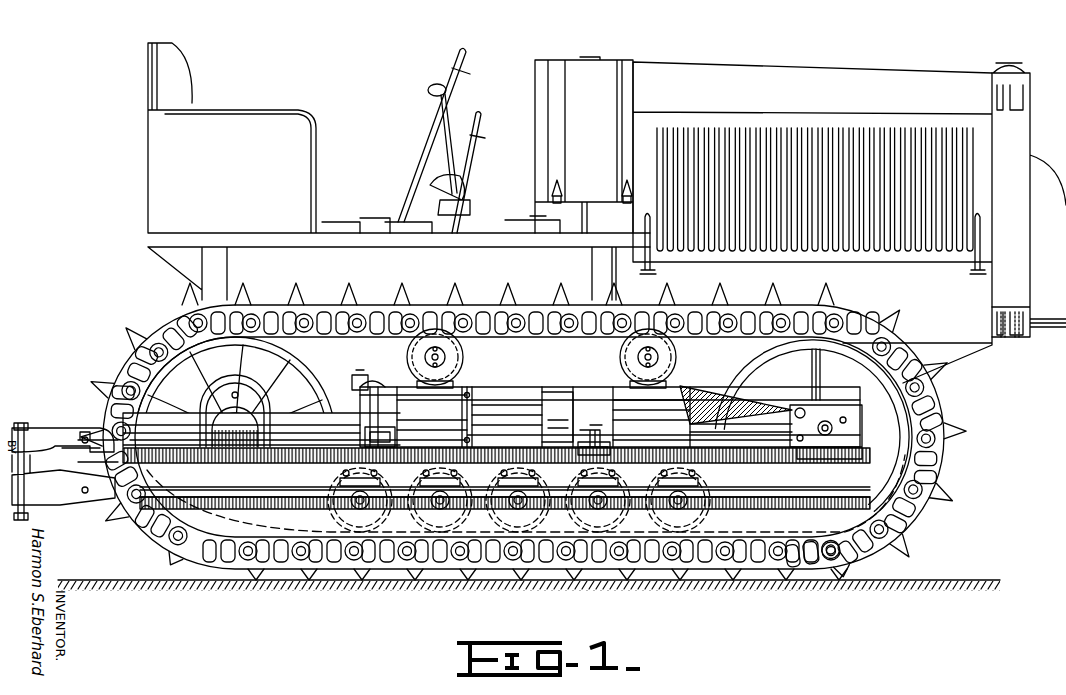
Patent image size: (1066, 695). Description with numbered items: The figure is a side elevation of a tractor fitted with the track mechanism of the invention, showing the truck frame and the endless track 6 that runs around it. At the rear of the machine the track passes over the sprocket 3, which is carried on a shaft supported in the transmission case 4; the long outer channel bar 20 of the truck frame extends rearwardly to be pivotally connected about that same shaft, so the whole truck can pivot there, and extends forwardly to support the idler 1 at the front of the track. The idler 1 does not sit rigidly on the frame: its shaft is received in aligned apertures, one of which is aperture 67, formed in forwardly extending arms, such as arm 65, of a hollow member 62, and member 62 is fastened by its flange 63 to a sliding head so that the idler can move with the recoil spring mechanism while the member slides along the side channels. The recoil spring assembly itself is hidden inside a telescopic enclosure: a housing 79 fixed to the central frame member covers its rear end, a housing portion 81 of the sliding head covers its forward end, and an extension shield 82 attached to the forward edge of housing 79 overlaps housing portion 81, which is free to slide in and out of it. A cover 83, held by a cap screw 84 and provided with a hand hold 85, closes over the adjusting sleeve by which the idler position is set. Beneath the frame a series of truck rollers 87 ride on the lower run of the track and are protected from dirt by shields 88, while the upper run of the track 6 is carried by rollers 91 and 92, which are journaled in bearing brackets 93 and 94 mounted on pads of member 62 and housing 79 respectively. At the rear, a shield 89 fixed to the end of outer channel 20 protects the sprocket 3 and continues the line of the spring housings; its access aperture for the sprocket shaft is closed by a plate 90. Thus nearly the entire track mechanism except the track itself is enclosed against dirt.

The idler 1 is at (858, 421).
The sprocket 3 is at (185, 363).
The transmission case 4 is at (264, 368).
The track 6 is at (926, 424).
The outer channel bar 20 is at (860, 498).
The member 62 is at (702, 406).
The flange 63 is at (626, 413).
The arm 65 is at (745, 438).
The aperture 67 is at (798, 407).
The housing 79 is at (478, 396).
The housing portion 81 is at (556, 410).
The extension shield 82 is at (511, 398).
The cover 83 is at (393, 385).
The cap screw 84 is at (400, 392).
The hand hold 85 is at (376, 432).
The truck rollers 87 is at (594, 541).
The shields 88 is at (766, 528).
The shield 89 is at (261, 412).
The plate 90 is at (230, 415).
The roller 91 is at (643, 329).
The roller 92 is at (434, 329).
The bearing bracket 93 is at (626, 395).
The bearing bracket 94 is at (468, 407).